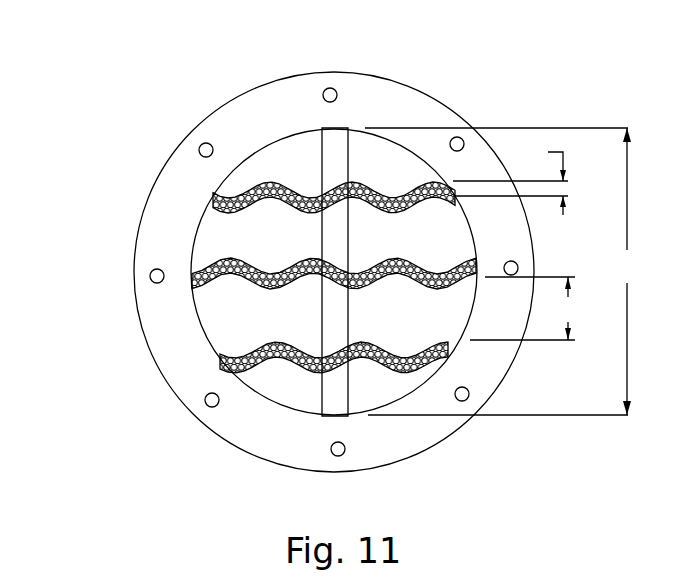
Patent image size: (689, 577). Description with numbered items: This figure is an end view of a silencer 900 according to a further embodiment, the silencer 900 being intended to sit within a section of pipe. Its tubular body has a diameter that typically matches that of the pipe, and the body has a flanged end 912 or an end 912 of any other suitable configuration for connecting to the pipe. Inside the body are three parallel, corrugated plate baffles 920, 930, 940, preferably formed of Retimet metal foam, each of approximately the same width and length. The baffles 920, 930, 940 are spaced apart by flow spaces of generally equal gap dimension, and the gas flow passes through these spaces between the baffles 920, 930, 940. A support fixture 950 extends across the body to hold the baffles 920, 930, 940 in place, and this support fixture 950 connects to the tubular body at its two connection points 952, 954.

The silencer 900 is at (150, 90).
The end of tubular body 912 is at (423, 110).
The corrugated plate baffle 920 is at (221, 360).
The corrugated plate baffle 930 is at (192, 285).
The corrugated plate baffle 940 is at (216, 198).
The support fixture 950 is at (330, 154).
The connection point of support fixture 952 is at (336, 128).
The connection point of support fixture 954 is at (320, 416).